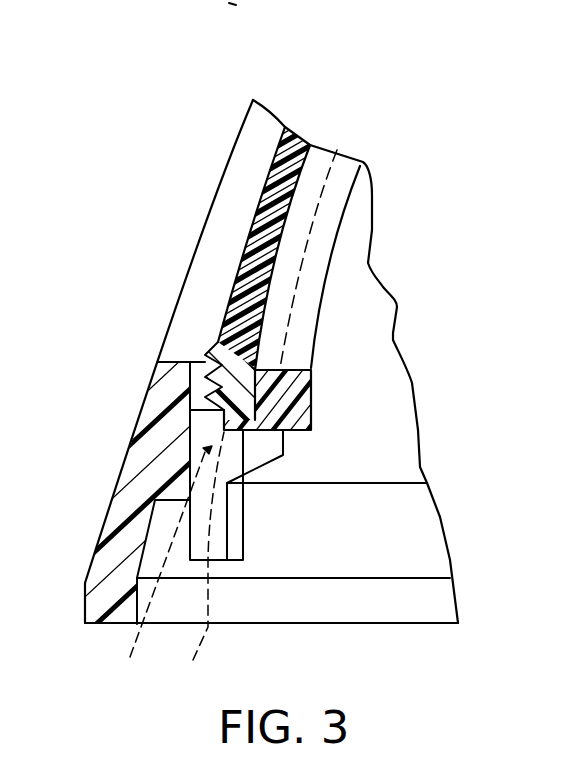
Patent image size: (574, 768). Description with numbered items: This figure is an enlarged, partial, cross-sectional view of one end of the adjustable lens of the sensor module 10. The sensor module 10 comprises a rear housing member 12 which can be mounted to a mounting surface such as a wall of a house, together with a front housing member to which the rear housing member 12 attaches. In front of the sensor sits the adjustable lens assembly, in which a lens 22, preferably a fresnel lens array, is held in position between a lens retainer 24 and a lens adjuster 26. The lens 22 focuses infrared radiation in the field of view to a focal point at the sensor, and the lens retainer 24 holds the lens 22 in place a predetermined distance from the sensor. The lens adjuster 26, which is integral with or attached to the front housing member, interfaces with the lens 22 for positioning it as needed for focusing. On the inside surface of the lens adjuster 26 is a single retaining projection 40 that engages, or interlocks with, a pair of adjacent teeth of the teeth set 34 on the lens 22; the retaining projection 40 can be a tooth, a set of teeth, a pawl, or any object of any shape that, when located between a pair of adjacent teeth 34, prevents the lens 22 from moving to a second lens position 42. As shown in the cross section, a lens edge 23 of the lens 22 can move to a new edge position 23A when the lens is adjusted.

The sensor module 10 is at (397, 229).
The rear housing member 12 is at (400, 623).
The lens 22 is at (238, 226).
The lens edge 23 is at (245, 460).
The new edge position 23A is at (194, 563).
The lens retainer 24 is at (293, 432).
The lens adjuster 26 is at (120, 470).
The teeth 34 is at (222, 350).
The retaining projection 40 is at (200, 362).
The second lens position 42 is at (161, 568).